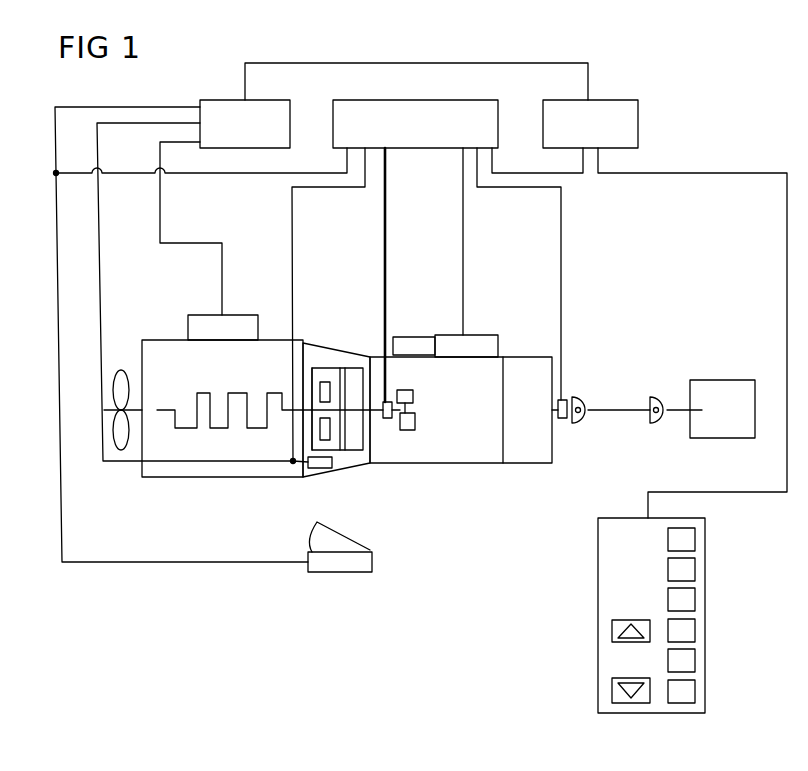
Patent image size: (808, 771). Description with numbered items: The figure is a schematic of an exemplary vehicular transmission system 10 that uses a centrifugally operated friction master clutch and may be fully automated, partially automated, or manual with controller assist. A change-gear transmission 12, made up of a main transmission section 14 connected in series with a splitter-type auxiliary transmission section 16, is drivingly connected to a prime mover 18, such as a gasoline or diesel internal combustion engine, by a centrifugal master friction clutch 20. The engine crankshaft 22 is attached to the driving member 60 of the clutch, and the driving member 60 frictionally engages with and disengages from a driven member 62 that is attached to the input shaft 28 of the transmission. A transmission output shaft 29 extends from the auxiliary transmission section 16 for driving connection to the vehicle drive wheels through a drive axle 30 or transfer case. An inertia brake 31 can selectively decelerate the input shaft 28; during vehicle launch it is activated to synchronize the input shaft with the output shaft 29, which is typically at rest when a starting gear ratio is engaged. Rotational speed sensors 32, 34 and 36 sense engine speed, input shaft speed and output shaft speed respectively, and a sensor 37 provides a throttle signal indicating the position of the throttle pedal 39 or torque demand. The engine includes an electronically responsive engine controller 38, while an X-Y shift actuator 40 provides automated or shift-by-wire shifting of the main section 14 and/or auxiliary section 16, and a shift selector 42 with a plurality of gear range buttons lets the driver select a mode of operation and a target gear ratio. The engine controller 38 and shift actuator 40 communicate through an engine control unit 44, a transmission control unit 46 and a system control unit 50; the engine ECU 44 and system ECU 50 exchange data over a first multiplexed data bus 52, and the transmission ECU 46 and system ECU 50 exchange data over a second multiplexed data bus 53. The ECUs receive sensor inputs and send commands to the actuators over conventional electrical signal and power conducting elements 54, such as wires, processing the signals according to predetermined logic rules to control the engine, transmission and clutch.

The vehicular transmission system 10 is at (606, 313).
The change-gear transmission 12 is at (433, 466).
The main transmission section 14 is at (470, 463).
The splitter-type auxiliary transmission section 16 is at (535, 463).
The prime mover 18 is at (160, 477).
The centrifugal master friction clutch 20 is at (323, 370).
The crankshaft 22 is at (197, 393).
The input shaft 28 is at (383, 420).
The transmission output shaft 29 is at (556, 411).
The drive axle 30 is at (713, 438).
The inertia brake 31 is at (410, 393).
The engine speed sensor 32 is at (310, 468).
The input shaft speed sensor 34 is at (392, 430).
The output shaft speed sensor 36 is at (567, 400).
The throttle position sensor 37 is at (330, 572).
The engine controller 38 is at (205, 315).
The throttle pedal 39 is at (365, 548).
The X-Y shift actuator 40 is at (455, 335).
The shift selector 42 is at (598, 643).
The engine control unit 44 is at (223, 100).
The transmission control unit 46 is at (398, 100).
The system control unit 50 is at (638, 122).
The first multiplexed data bus 52 is at (568, 63).
The second multiplexed data bus 53 is at (583, 176).
The electrical signal and power conducting elements 54 is at (99, 300).
The driving member 60 is at (312, 375).
The driven member 62 is at (333, 382).